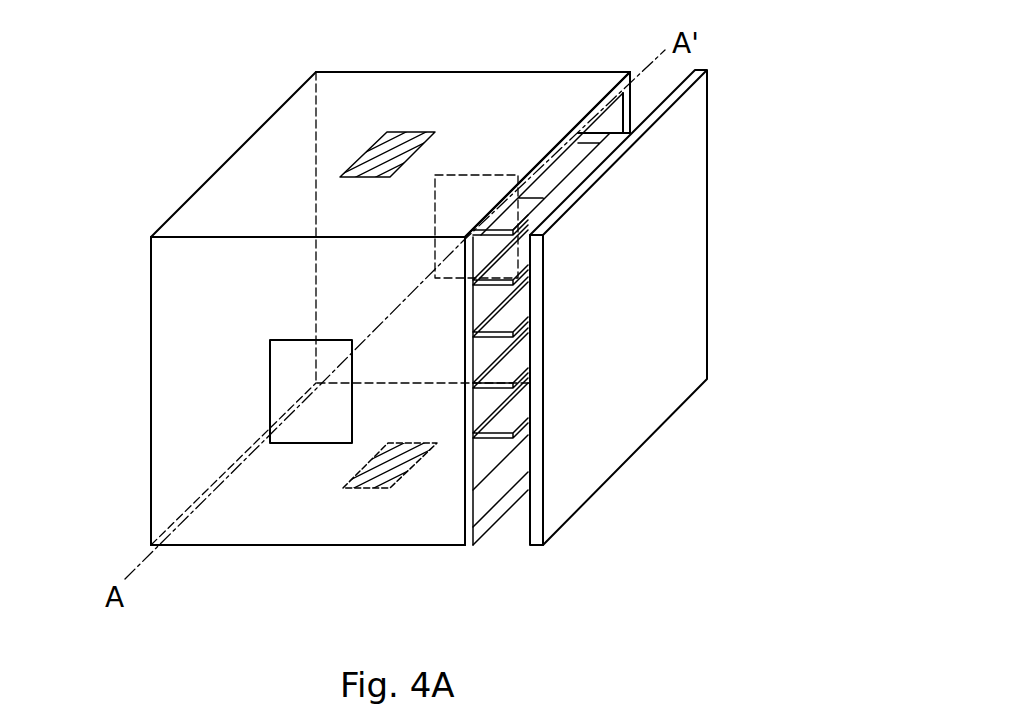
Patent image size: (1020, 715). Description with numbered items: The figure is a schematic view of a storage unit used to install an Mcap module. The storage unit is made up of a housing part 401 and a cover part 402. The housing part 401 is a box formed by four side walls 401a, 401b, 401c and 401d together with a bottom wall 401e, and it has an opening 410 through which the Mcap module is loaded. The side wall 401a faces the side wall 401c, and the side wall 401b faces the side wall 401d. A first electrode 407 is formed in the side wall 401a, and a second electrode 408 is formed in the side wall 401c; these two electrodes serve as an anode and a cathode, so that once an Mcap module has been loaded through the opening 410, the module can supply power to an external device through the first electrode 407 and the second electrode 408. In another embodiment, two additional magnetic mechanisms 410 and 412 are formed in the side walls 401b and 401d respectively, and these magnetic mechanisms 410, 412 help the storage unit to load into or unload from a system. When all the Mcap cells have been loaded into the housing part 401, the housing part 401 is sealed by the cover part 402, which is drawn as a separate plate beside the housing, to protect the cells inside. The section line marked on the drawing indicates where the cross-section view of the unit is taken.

The housing part 401 is at (322, 556).
The side wall 401a is at (258, 522).
The side wall 401b is at (403, 140).
The side wall 401c is at (552, 88).
The side wall 401d is at (436, 518).
The bottom wall 401e is at (151, 327).
The cover part 402 is at (540, 560).
The first electrode 407 is at (291, 375).
The second electrode 408 is at (464, 193).
The opening 410 is at (368, 155).
The magnetic mechanism 412 is at (382, 470).